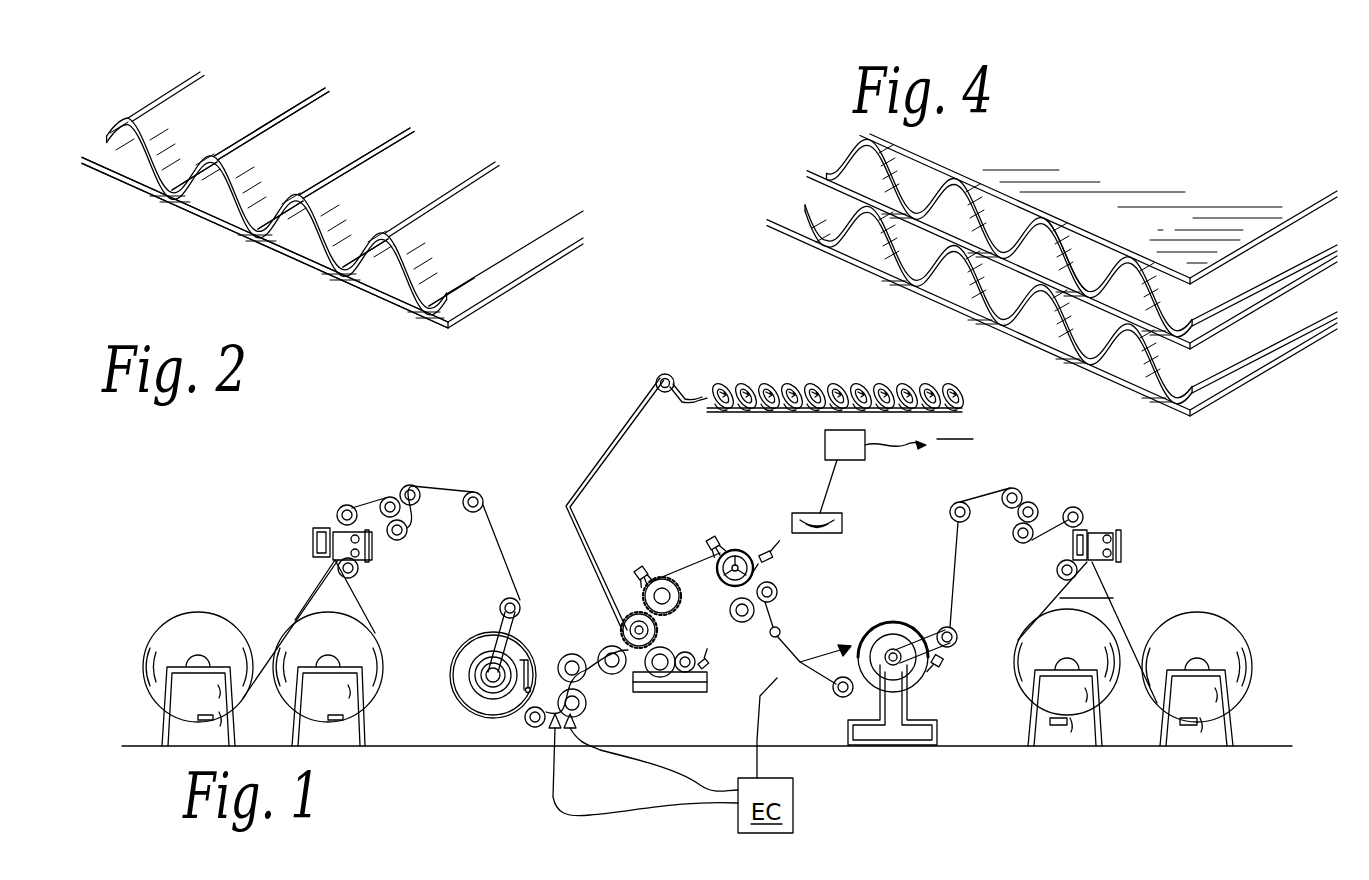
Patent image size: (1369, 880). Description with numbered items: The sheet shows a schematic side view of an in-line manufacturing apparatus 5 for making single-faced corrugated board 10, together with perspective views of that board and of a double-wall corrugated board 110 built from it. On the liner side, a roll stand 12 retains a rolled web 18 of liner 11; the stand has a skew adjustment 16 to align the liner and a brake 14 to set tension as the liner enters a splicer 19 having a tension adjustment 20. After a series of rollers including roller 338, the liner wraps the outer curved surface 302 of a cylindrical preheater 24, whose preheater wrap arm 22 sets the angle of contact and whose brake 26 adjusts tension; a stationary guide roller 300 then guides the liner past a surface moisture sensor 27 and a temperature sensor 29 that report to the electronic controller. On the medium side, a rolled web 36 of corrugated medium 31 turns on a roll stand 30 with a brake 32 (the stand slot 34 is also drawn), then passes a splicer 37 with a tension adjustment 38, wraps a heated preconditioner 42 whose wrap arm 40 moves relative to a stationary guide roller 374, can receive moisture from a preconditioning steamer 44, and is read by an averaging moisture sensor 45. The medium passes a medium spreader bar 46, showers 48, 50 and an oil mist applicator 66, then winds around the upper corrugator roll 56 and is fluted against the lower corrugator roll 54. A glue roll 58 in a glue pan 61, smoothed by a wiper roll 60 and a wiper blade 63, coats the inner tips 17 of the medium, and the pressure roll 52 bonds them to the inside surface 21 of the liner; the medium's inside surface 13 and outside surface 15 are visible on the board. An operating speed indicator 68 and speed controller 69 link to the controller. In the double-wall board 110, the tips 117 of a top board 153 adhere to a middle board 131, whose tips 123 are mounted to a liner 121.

In FIG. 1, the manufacturing apparatus 5 is at (227, 538).
In FIG. 2, the single-faced corrugated board 10 is at (392, 316).
In FIG. 2, the liner 11 is at (227, 230).
In FIG. 1, the liner 11 is at (298, 607).
In FIG. 1, the roll stand 12 is at (180, 713).
In FIG. 2, the inside surface 13 is at (290, 207).
In FIG. 1, the brake 14 is at (225, 687).
In FIG. 2, the outside surface 15 is at (337, 178).
In FIG. 1, the skew adjustment 16 is at (232, 723).
In FIG. 2, the inner tips 17 is at (253, 240).
In FIG. 1, the rolled web 18 is at (192, 620).
In FIG. 1, the splicer 19 is at (313, 540).
In FIG. 1, the tension adjustment 20 is at (372, 542).
In FIG. 2, the inside surface 21 is at (195, 200).
In FIG. 1, the preheater wrap arm 22 is at (502, 607).
In FIG. 1, the preheater 24 is at (470, 680).
In FIG. 1, the brake 26 is at (570, 655).
In FIG. 1, the surface moisture sensor 27 is at (550, 730).
In FIG. 1, the temperature sensor 29 is at (575, 735).
In FIG. 1, the roll stand 30 is at (1090, 727).
In FIG. 2, the corrugated medium 31 is at (210, 153).
In FIG. 1, the corrugated medium 31 is at (1113, 598).
In FIG. 1, the brake 32 is at (1090, 685).
In FIG. 1, the roll stand slot 34 is at (1063, 725).
In FIG. 1, the rolled web 36 is at (1025, 638).
In FIG. 1, the splicer 37 is at (1073, 547).
In FIG. 1, the tension adjustment 38 is at (1100, 532).
In FIG. 1, the wrap arm 40 is at (943, 630).
In FIG. 1, the preconditioner 42 is at (888, 625).
In FIG. 1, the preconditioning steamer 44 is at (942, 665).
In FIG. 1, the moisture sensor 45 is at (845, 645).
In FIG. 1, the medium spreader bar 46 is at (779, 628).
In FIG. 1, the shower 48 is at (772, 558).
In FIG. 1, the shower 50 is at (718, 541).
In FIG. 1, the pressure roll 52 is at (613, 674).
In FIG. 1, the lower corrugator roll 54 is at (630, 622).
In FIG. 1, the upper corrugator roll 56 is at (660, 580).
In FIG. 1, the glue roll 58 is at (660, 676).
In FIG. 1, the wiper roll 60 is at (693, 675).
In FIG. 1, the glue pan 61 is at (707, 682).
In FIG. 1, the wiper blade 63 is at (706, 665).
In FIG. 1, the oil mist applicator 66 is at (642, 572).
In FIG. 1, the operating speed indicator 68 is at (842, 520).
In FIG. 1, the speed controller 69 is at (825, 440).
In FIG. 4, the double-wall corrugated board 110 is at (1247, 210).
In FIG. 4, the tips 117 is at (1008, 240).
In FIG. 4, the liner 121 is at (1140, 400).
In FIG. 4, the tips 123 is at (1003, 333).
In FIG. 4, the middle single-faced corrugated board 131 is at (1057, 360).
In FIG. 4, the top single-faced corrugated board 153 is at (1103, 263).
In FIG. 1, the stationary guide roller 300 is at (530, 723).
In FIG. 1, the outer curved surface 302 is at (522, 605).
In FIG. 1, the roller 338 is at (467, 510).
In FIG. 1, the stationary guide roller 374 is at (840, 697).